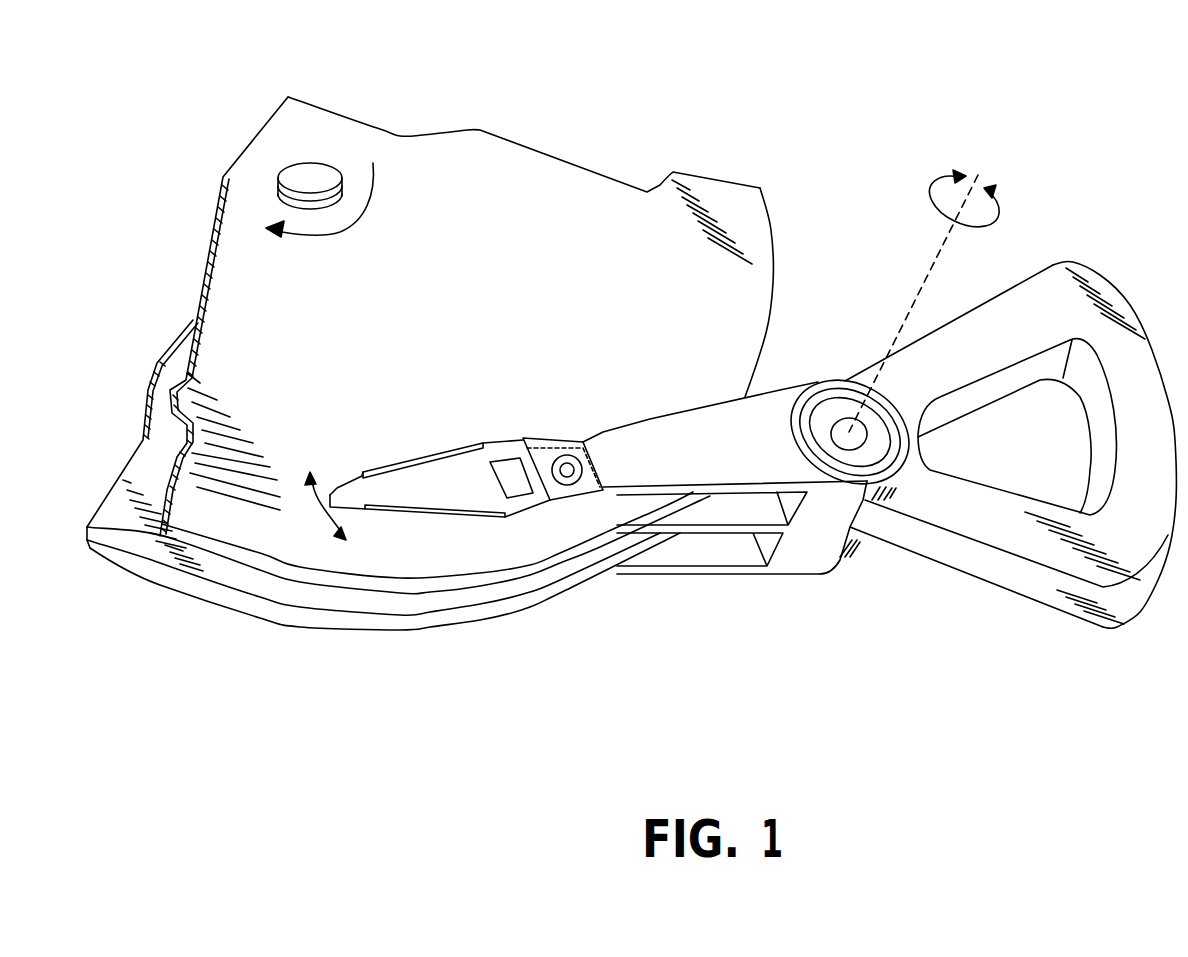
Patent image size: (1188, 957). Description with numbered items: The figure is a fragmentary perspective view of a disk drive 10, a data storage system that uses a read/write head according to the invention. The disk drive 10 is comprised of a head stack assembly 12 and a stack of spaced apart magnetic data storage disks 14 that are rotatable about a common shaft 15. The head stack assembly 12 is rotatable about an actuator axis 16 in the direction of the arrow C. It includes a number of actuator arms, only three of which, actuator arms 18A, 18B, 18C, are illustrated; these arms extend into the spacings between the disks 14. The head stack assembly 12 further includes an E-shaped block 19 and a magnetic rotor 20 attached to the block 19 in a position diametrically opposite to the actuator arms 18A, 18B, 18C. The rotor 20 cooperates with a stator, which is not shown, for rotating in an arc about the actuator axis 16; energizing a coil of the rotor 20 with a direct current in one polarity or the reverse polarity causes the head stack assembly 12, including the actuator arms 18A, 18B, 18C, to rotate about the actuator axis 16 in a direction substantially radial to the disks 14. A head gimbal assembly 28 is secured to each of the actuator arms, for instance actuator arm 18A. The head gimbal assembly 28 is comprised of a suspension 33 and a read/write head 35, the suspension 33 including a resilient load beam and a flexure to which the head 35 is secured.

The disk drive 10 is at (618, 57).
The head stack assembly 12 is at (814, 606).
The magnetic data storage disks 14 is at (512, 234).
The common shaft 15 is at (292, 170).
The actuator axis 16 is at (947, 246).
The actuator arm 18A is at (707, 407).
The actuator arm 18B is at (697, 535).
The actuator arm 18C is at (727, 567).
The E-shaped block 19 is at (840, 583).
The magnetic rotor 20 is at (997, 573).
The head gimbal assembly 28 is at (430, 441).
The suspension 33 is at (467, 500).
The read/write head 35 is at (331, 508).